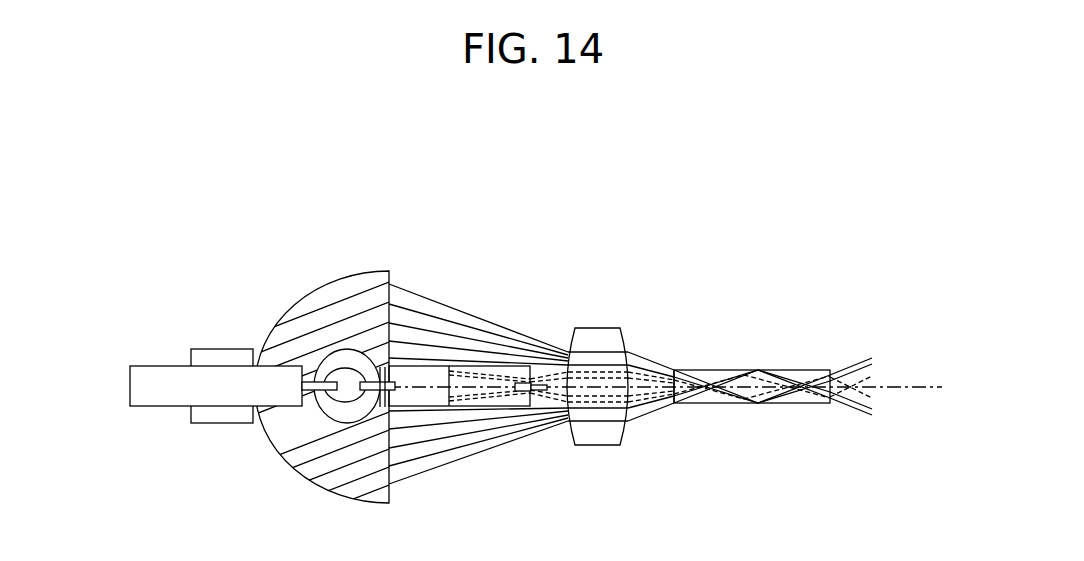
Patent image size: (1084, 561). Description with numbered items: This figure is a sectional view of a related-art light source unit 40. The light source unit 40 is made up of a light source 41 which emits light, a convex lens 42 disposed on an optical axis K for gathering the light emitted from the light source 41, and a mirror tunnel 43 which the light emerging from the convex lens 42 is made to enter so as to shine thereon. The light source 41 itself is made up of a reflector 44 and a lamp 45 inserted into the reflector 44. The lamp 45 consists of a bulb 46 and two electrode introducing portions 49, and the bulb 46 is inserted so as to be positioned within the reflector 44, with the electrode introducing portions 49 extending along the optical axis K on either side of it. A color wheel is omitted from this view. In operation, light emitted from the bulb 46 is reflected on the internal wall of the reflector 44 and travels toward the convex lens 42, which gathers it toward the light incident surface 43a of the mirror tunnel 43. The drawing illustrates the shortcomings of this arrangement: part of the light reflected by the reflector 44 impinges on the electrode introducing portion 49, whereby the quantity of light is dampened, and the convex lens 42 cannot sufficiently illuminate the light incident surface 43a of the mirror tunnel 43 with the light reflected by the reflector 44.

The light source unit 40 is at (563, 175).
The light source 41 is at (386, 172).
The convex lens 42 is at (598, 328).
The mirror tunnel 43 is at (777, 369).
The light incident surface 43a is at (672, 366).
The reflector 44 is at (383, 270).
The lamp 45 is at (266, 252).
The bulb 46 is at (320, 423).
The electrode introducing portion 49 is at (155, 366).
The optical axis K is at (918, 383).